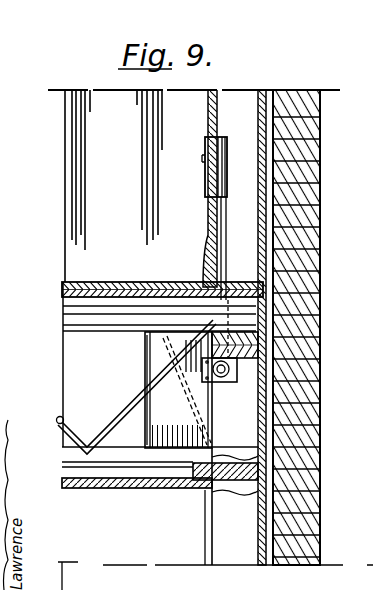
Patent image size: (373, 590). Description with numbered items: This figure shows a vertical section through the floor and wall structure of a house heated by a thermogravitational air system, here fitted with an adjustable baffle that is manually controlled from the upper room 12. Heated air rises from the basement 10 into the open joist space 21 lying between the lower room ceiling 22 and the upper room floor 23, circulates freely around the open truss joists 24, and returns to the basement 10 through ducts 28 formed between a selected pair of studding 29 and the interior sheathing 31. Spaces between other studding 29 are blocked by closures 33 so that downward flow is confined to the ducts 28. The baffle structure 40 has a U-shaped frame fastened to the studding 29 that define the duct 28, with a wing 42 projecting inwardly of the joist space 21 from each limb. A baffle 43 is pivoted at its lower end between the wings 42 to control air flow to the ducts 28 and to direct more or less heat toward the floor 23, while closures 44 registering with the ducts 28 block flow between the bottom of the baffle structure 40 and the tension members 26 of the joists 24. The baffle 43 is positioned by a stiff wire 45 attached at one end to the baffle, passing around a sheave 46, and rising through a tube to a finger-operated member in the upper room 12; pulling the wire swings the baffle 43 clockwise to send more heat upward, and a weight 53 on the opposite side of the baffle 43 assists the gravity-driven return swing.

The basement 10 is at (0, 172).
The upper room 12 is at (88, 153).
The joist space 21 is at (85, 341).
The lower room ceiling 22 is at (97, 488).
The upper room floor 23 is at (98, 282).
The open joists 24 is at (57, 417).
The tension members 26 is at (135, 464).
The ducts 28 is at (226, 506).
The studding 29 is at (210, 552).
The interior sheathing 31 is at (255, 552).
The closures 33 is at (210, 493).
The baffle structure 40 is at (126, 368).
The wing 42 is at (137, 387).
The baffle 43 is at (190, 408).
The closures 44 is at (216, 449).
The wire 45 is at (200, 390).
The sheave 46 is at (228, 380).
The weight 53 is at (183, 390).